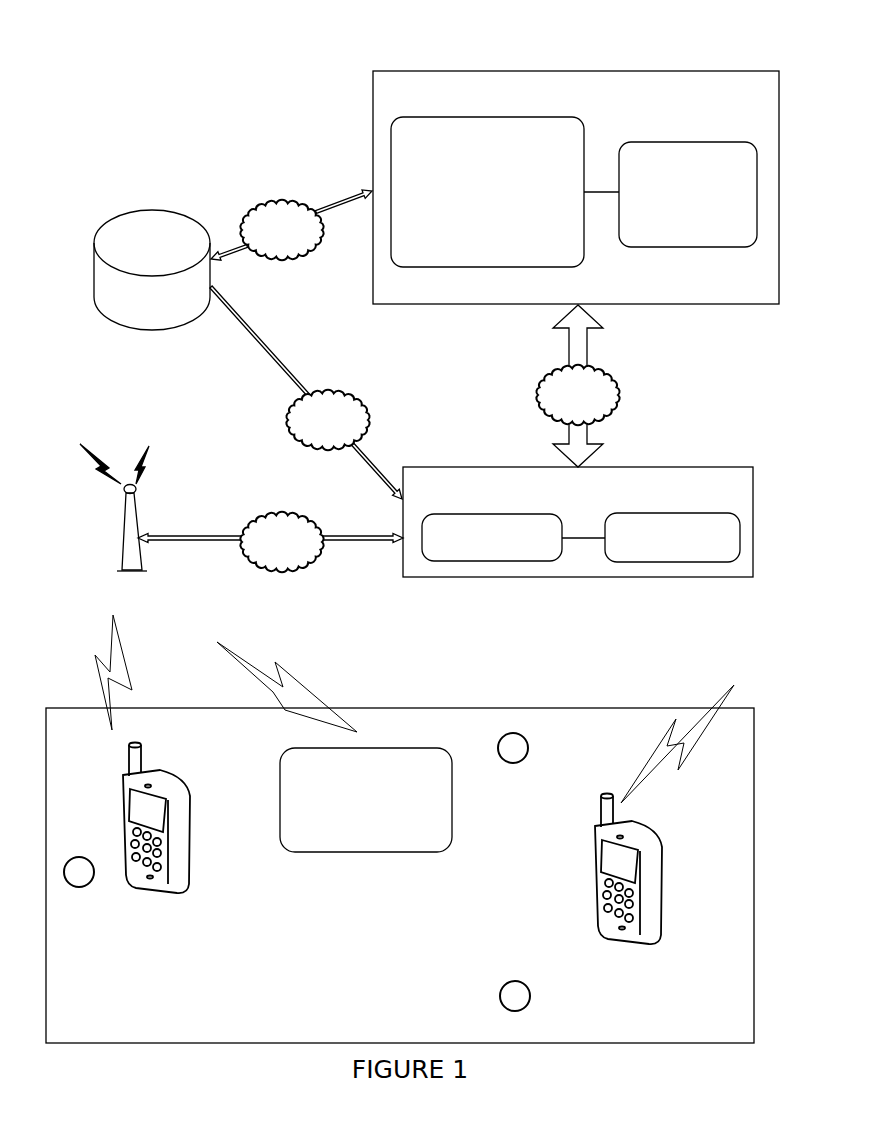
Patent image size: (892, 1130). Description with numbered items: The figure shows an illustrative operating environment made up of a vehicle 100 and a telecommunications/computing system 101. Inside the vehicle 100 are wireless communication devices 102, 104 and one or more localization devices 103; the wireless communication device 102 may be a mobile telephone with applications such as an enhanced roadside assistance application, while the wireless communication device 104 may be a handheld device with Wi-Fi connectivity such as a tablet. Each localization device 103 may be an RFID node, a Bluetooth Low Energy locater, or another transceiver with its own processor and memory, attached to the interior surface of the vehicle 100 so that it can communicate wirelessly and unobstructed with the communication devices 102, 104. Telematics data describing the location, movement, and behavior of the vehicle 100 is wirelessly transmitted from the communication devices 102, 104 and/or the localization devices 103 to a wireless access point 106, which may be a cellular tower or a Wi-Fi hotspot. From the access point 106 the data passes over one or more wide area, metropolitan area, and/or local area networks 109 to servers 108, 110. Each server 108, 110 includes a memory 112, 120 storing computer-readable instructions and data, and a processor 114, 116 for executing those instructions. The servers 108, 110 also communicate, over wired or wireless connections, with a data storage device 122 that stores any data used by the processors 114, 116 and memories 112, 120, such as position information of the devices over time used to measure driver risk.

The vehicle 100 is at (758, 708).
The telecommunications/computing system 101 is at (163, 87).
The wireless communication device 102 is at (168, 897).
The localization device 103 is at (79, 895).
The wireless communication device 104 is at (367, 852).
The wireless access point 106 is at (111, 507).
The server 108 is at (403, 578).
The wide area, metropolitan area, and/or local area networks 109 is at (286, 203).
The server 110 is at (373, 304).
The memory 112 is at (490, 562).
The processor 114 is at (672, 562).
The processor 116 is at (685, 142).
The memory 120 is at (487, 117).
The data storage device 122 is at (165, 236).